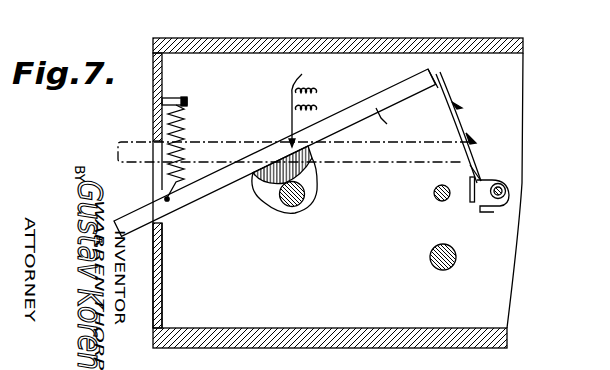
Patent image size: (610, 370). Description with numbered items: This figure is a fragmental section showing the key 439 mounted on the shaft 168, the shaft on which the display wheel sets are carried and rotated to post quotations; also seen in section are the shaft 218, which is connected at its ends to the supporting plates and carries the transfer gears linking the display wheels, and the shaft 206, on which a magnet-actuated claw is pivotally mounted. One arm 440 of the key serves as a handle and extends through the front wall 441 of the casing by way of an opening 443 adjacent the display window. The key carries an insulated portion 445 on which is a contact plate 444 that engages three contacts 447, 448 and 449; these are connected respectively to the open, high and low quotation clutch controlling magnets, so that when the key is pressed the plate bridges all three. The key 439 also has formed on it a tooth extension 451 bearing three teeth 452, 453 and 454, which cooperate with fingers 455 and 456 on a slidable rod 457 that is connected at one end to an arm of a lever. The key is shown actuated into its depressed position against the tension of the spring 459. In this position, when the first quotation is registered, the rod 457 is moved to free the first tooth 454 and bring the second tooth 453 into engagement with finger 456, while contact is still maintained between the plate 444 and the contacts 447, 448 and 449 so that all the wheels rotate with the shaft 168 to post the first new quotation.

The key 439 is at (396, 121).
The arm 440 is at (134, 212).
The front wall 441 is at (163, 265).
The opening 443 is at (153, 144).
The contact 444 is at (263, 152).
The insulated portion 445 is at (257, 180).
The contact 447 is at (288, 102).
The contact 448 is at (317, 92).
The contact 449 is at (318, 106).
The tooth extension 451 is at (452, 100).
The tooth 452 is at (460, 105).
The tooth 453 is at (473, 138).
The tooth 454 is at (482, 170).
The finger 455 is at (487, 180).
The finger 456 is at (493, 207).
The slidable rod 457 is at (505, 190).
The spring 459 is at (184, 124).
The shaft 168 is at (291, 207).
The shaft 218 is at (433, 195).
The shaft 206 is at (445, 270).